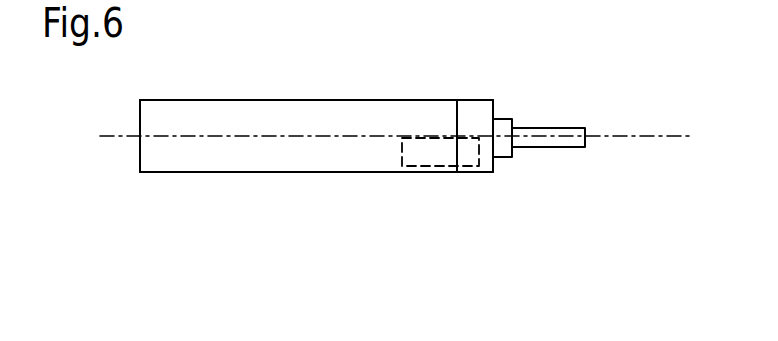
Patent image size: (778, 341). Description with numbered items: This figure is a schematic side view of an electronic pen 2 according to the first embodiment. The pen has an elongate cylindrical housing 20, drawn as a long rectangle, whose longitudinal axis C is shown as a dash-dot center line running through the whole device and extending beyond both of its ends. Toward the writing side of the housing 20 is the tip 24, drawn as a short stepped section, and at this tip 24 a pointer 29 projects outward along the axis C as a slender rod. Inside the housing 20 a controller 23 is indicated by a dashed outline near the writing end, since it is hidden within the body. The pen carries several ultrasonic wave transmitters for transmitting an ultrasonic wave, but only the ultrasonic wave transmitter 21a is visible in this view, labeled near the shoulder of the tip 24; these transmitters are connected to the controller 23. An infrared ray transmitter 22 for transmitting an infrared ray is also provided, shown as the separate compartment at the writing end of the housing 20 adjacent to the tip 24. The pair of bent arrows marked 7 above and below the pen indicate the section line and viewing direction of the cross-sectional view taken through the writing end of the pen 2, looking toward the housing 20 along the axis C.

The electronic pen 2 is at (318, 80).
The housing 20 is at (403, 99).
The ultrasonic wave transmitter 21a is at (511, 158).
The infrared ray transmitter 22 is at (467, 172).
The controller 23 is at (407, 172).
The tip 24 is at (513, 119).
The pointer 29 is at (552, 128).
The section line 7- 7 is at (483, 65).
The longitudinal axis C is at (641, 136).